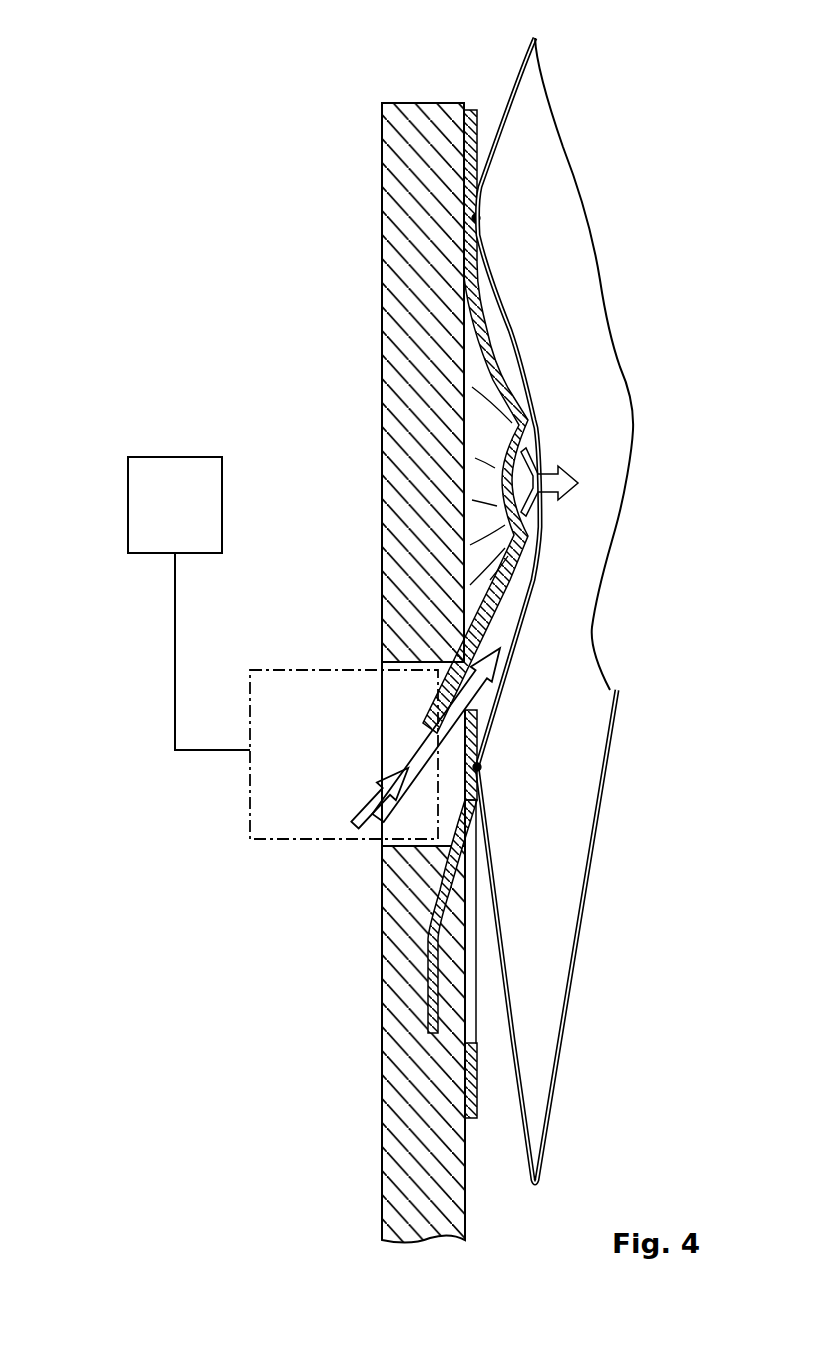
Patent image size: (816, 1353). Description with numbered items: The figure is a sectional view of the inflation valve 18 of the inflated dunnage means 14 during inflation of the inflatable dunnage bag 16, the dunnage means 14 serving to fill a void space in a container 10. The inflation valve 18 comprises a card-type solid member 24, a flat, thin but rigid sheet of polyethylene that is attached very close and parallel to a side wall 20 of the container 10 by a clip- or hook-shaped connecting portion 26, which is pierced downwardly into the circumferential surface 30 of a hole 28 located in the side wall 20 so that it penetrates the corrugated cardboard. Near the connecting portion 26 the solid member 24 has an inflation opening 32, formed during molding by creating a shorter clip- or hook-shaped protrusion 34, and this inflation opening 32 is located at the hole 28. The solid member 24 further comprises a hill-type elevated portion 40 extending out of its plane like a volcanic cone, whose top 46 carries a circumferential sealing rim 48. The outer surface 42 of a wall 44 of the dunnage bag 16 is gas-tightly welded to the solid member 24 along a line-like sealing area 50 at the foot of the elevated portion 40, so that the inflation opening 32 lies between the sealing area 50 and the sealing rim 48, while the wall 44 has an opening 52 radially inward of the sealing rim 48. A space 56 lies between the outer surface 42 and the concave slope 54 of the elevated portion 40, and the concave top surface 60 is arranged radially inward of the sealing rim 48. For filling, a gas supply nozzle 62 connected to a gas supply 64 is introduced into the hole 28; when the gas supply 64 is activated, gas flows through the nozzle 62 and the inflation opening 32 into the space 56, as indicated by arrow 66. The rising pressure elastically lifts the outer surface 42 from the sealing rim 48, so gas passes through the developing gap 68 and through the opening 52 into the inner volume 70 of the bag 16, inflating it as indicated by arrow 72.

The container 10 is at (382, 96).
The inflated dunnage means 14 is at (587, 610).
The inflatable dunnage bag 16 is at (597, 315).
The inflation valve 18 is at (478, 518).
The side wall 20 is at (405, 150).
The solid member 24 is at (470, 108).
The connecting portion 26 is at (430, 1007).
The hole 28 is at (443, 658).
The circumferential surface 30 is at (413, 840).
The inflation opening 32 is at (483, 723).
The protrusion 34 is at (423, 723).
The elevated portion 40 is at (518, 608).
The outer surface 42 is at (523, 1122).
The wall 44 is at (527, 1148).
The top 46 is at (478, 443).
The sealing rim 48 is at (538, 542).
The sealing area 50 is at (482, 767).
The opening 52 is at (541, 493).
The slope 54 is at (460, 303).
The space 56 is at (483, 272).
The top surface 60 is at (503, 480).
The gas supply nozzle 62 is at (307, 843).
The gas supply 64 is at (128, 497).
The arrow 66 is at (400, 765).
The gap 68 is at (536, 427).
The inner volume 70 is at (540, 865).
The arrow 72 is at (578, 483).